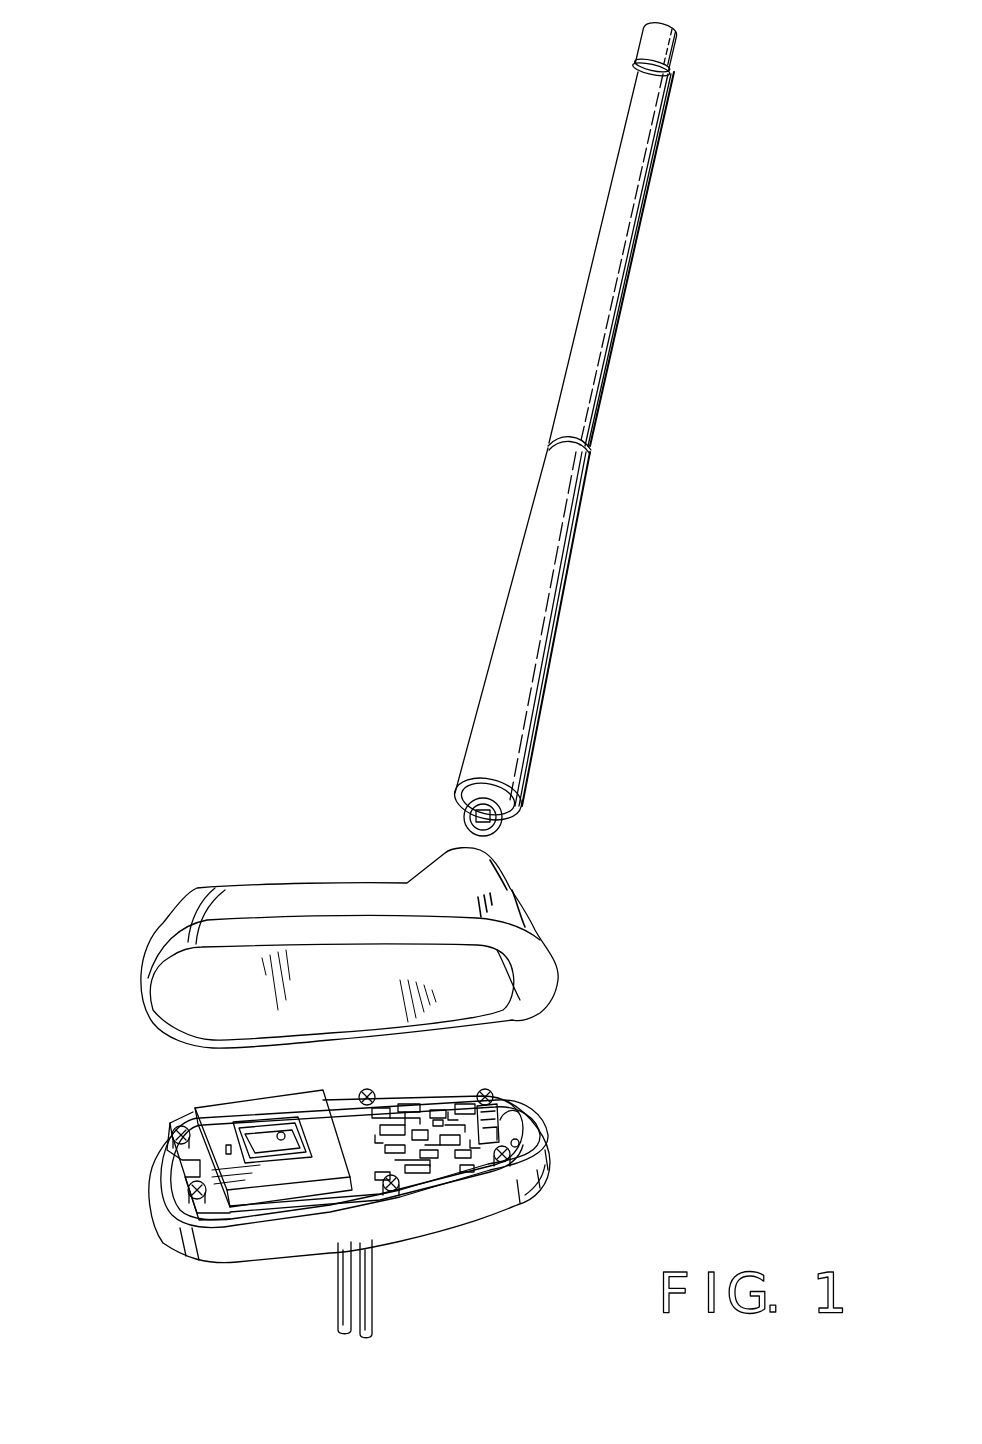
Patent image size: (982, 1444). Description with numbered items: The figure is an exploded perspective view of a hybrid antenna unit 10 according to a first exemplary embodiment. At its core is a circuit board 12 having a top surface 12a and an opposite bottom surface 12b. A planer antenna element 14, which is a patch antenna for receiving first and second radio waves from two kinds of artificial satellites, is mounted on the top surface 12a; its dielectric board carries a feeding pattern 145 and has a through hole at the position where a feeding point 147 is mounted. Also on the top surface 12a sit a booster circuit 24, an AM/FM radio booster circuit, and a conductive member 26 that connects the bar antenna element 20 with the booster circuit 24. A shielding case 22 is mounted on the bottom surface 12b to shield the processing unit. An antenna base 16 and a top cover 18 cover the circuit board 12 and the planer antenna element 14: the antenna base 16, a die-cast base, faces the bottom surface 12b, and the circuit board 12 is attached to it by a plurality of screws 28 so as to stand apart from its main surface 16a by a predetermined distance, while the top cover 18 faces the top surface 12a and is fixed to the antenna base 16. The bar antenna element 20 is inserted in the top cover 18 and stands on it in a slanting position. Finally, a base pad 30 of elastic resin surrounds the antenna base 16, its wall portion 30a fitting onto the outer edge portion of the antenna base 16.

The hybrid antenna unit 10 is at (228, 186).
The bar antenna element 20 is at (610, 217).
The top cover 18 is at (240, 895).
The planer antenna element 14 is at (226, 1120).
The feeding point 147 is at (281, 1130).
The feeding pattern 145 is at (225, 1150).
The screws 28 is at (172, 1133).
The circuit board 12 is at (450, 1172).
The top surface 12a is at (390, 1105).
The bottom surface 12b is at (550, 1178).
The conductive member 26 is at (515, 1126).
The antenna base 16 is at (537, 1120).
The main surface 16a is at (520, 1120).
The base pad 30 is at (498, 1207).
The wall portion 30a is at (540, 1137).
The shielding case 22 is at (273, 1210).
The booster circuit 24 is at (408, 1203).